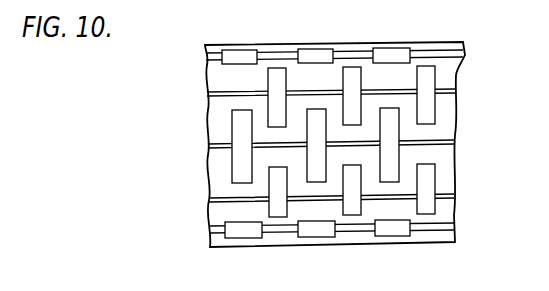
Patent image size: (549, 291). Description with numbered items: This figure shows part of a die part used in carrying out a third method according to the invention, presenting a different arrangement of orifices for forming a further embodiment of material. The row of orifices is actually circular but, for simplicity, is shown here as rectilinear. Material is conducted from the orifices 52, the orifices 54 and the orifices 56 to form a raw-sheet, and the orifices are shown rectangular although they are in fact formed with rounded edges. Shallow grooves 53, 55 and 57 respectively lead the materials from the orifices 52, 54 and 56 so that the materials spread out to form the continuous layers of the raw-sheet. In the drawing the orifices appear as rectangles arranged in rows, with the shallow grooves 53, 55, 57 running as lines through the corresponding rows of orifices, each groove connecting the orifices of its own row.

The orifice 52 is at (390, 155).
The shallow groove 53 is at (210, 147).
The orifice 54 is at (427, 78).
The shallow groove 55 is at (207, 94).
The orifice 56 is at (398, 52).
The shallow groove 57 is at (205, 57).